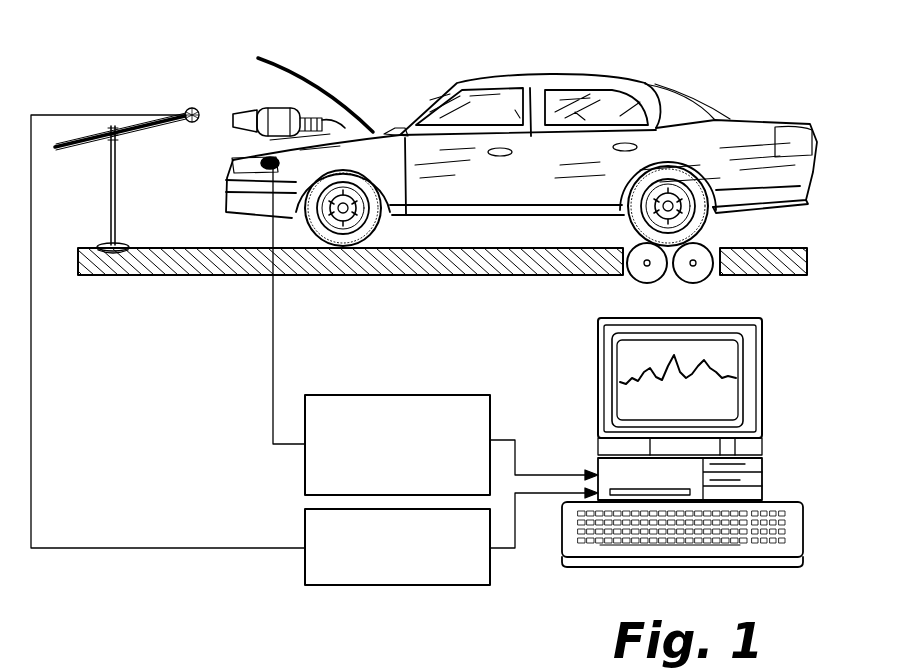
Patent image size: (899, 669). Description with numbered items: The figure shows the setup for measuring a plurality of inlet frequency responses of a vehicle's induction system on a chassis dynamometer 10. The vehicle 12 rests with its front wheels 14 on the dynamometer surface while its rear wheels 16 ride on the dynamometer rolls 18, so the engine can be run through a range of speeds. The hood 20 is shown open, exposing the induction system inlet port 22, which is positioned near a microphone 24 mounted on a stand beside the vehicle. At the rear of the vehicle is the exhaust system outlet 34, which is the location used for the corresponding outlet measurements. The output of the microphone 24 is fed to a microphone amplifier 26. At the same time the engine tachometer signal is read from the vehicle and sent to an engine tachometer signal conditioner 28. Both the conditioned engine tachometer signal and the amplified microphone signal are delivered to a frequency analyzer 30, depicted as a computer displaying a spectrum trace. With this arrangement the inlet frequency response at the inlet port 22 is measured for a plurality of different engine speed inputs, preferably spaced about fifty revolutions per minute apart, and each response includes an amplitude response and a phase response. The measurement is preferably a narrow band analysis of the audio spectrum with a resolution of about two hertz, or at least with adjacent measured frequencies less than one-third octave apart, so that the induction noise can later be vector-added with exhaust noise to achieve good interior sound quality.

The chassis dynamometer 10 is at (360, 80).
The vehicle 12 is at (688, 102).
The front wheels 14 is at (380, 237).
The rear wheels 16 is at (630, 227).
The dynamometer rolls 18 is at (630, 278).
The hood 20 is at (303, 78).
The induction system inlet port 22 is at (243, 110).
The microphone 24 is at (186, 122).
The microphone amplifier 26 is at (340, 586).
The engine tachometer signal conditioner 28 is at (343, 395).
The frequency analyzer 30 is at (762, 400).
The exhaust system outlet 34 is at (790, 208).